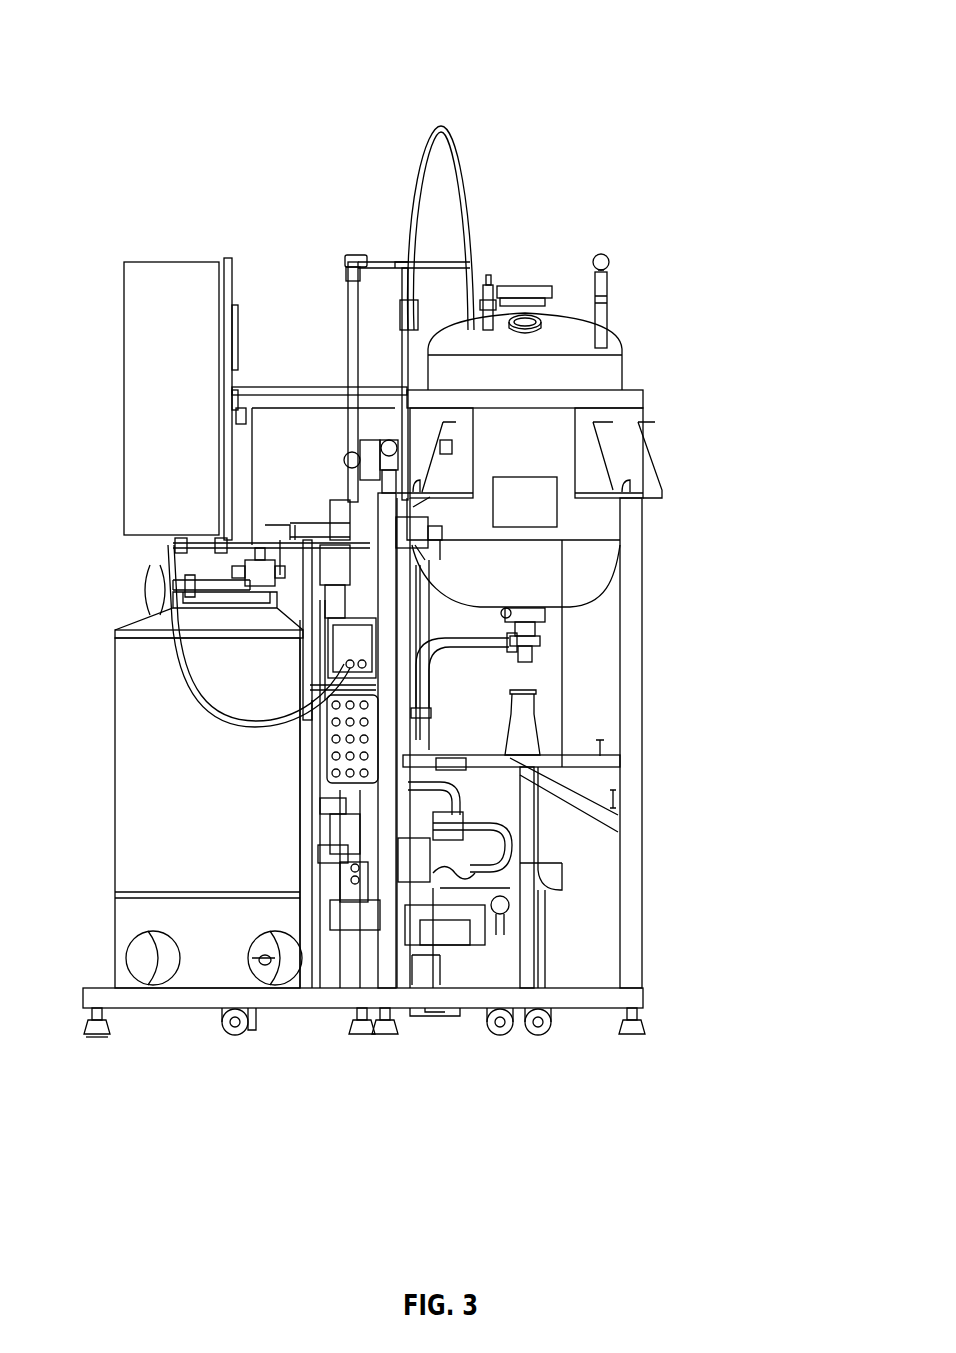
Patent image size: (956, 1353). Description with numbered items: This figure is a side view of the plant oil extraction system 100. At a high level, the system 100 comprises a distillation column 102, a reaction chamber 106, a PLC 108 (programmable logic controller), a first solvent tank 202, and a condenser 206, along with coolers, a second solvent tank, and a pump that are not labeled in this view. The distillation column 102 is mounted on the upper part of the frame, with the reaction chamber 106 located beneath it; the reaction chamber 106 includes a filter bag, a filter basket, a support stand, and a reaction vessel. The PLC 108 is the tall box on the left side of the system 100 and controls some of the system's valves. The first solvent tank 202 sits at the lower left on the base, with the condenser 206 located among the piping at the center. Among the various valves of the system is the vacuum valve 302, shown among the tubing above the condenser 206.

The plant oil extraction system 100 is at (746, 66).
The distillation column 102 is at (616, 372).
The reaction chamber 106 is at (572, 686).
The PLC 108 is at (165, 268).
The first solvent tank 202 is at (122, 654).
The condenser 206 is at (318, 826).
The vacuum valve 302 is at (386, 450).